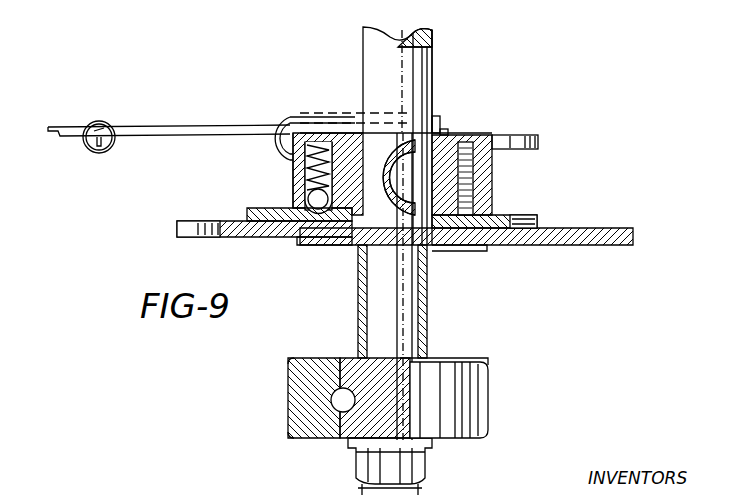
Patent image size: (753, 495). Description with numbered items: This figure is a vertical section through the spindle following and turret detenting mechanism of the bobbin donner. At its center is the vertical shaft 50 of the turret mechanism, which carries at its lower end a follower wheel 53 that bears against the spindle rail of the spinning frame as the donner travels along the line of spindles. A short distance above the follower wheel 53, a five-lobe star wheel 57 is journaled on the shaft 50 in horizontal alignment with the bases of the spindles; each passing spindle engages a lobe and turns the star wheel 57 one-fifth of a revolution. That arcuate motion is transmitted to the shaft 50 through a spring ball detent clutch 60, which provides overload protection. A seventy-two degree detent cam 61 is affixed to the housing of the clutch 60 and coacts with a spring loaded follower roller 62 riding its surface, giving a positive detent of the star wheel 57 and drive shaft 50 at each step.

The vertical shaft 50 is at (427, 296).
The follower wheel 53 is at (490, 402).
The five-lobe star wheel 57 is at (590, 237).
The spring ball detent clutch 60 is at (292, 180).
The detent cam 61 is at (528, 132).
The spring loaded follower roller 62 is at (198, 127).